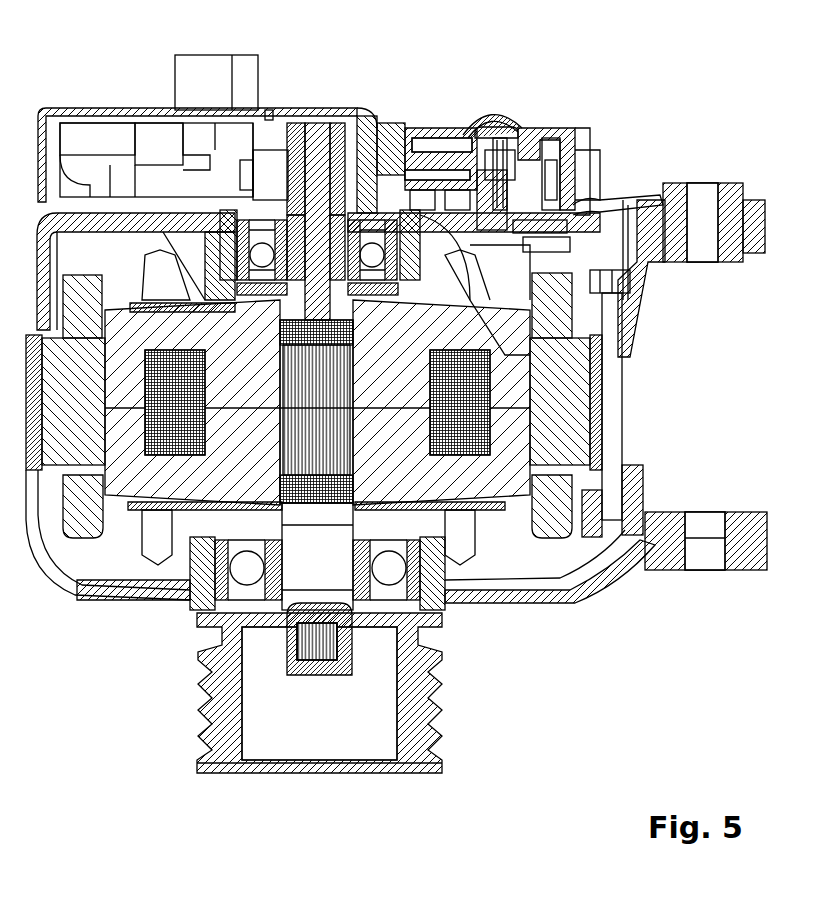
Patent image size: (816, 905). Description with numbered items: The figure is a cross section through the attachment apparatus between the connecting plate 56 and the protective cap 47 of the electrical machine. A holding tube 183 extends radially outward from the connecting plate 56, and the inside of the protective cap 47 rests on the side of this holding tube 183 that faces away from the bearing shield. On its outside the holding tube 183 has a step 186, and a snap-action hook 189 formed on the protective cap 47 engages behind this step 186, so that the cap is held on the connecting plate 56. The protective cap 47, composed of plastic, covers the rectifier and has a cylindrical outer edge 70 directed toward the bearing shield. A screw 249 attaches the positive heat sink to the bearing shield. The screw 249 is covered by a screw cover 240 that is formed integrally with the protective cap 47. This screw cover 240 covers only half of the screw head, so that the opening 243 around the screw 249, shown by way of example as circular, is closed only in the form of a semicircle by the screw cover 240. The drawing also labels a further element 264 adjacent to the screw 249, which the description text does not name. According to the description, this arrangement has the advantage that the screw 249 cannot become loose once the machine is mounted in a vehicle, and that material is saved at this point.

The protective cap 47 is at (393, 133).
The connecting plate 56 is at (373, 117).
The screw cover 240 is at (483, 110).
The opening 243 is at (523, 127).
The screw 249 is at (495, 163).
The screw 264 is at (507, 123).
The holding tube 183 is at (550, 153).
The cylindrical outer edge 70 is at (580, 143).
The step 186 is at (578, 176).
The snap-action hook 189 is at (573, 200).